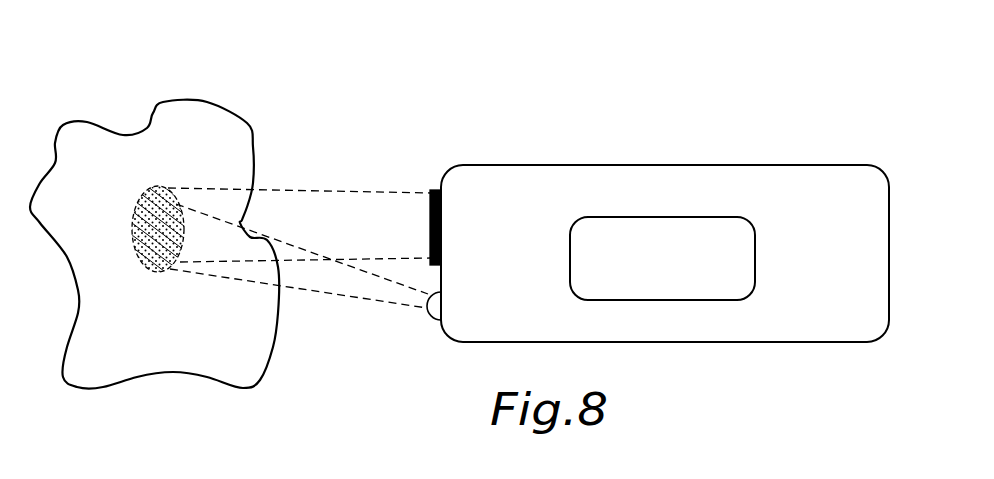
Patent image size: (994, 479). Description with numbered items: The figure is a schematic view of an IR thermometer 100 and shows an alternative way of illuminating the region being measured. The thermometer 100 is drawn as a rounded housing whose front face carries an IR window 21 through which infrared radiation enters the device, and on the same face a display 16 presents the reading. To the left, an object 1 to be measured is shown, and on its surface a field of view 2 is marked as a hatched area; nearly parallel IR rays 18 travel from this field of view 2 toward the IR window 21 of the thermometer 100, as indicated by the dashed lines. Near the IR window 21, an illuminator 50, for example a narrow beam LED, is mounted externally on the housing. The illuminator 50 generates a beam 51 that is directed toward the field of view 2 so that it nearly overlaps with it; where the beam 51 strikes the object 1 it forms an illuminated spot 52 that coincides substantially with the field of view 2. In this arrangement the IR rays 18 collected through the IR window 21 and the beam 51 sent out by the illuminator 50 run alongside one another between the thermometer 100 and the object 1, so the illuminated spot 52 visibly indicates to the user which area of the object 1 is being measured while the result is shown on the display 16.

The object 1 is at (242, 130).
The field of view 2 is at (163, 188).
The display 16 is at (737, 263).
The IR rays 18 is at (323, 198).
The IR window 21 is at (441, 208).
The illuminator 50 is at (432, 307).
The beam 51 is at (363, 300).
The illuminated spot 52 is at (160, 268).
The IR thermometer 100 is at (695, 155).